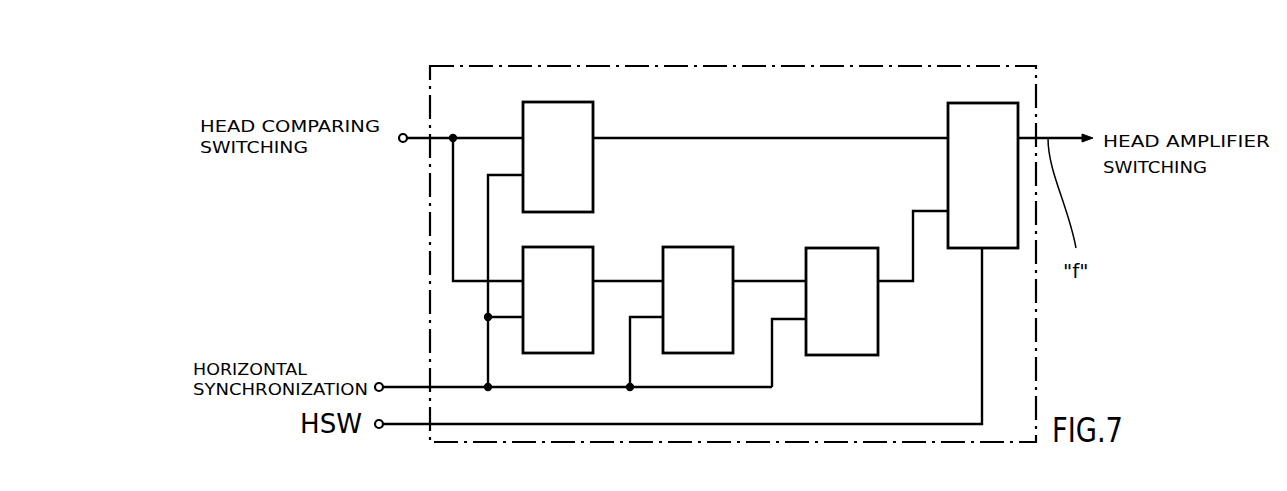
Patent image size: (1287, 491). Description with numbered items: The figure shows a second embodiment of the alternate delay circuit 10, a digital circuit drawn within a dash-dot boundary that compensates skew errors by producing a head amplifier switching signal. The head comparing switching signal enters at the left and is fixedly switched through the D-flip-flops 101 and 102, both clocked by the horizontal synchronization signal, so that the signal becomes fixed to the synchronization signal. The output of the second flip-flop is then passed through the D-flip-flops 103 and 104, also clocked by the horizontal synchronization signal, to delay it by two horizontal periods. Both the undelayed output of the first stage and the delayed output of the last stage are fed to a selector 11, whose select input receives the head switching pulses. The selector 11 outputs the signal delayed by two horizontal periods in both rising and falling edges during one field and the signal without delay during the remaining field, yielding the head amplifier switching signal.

The alternate delay circuit 10 is at (832, 66).
The selector 11 is at (980, 103).
The D-flip-flop 101 is at (596, 119).
The D-flip-flop 102 is at (596, 256).
The D-flip-flop 103 is at (693, 247).
The D-flip-flop 104 is at (832, 248).